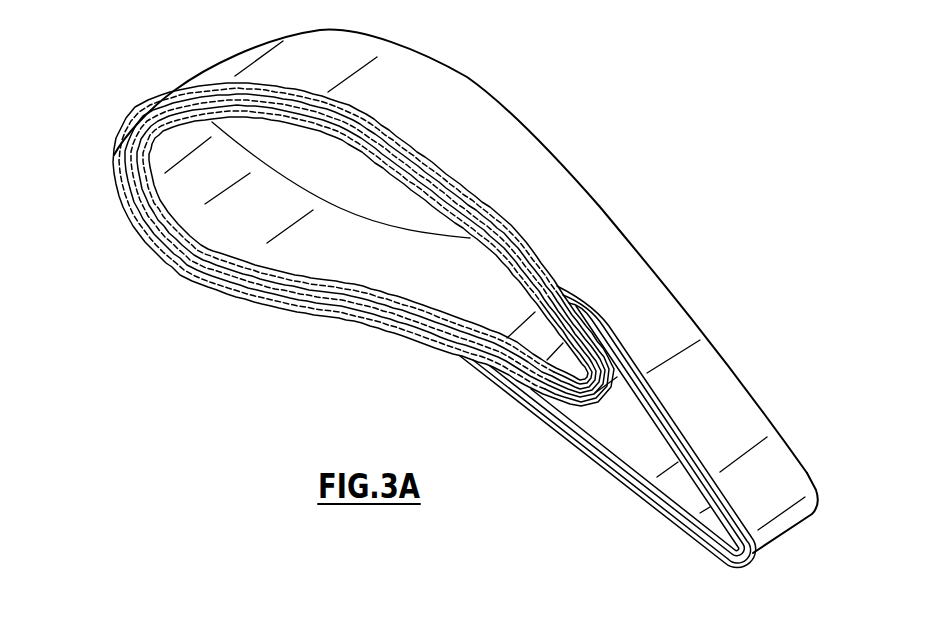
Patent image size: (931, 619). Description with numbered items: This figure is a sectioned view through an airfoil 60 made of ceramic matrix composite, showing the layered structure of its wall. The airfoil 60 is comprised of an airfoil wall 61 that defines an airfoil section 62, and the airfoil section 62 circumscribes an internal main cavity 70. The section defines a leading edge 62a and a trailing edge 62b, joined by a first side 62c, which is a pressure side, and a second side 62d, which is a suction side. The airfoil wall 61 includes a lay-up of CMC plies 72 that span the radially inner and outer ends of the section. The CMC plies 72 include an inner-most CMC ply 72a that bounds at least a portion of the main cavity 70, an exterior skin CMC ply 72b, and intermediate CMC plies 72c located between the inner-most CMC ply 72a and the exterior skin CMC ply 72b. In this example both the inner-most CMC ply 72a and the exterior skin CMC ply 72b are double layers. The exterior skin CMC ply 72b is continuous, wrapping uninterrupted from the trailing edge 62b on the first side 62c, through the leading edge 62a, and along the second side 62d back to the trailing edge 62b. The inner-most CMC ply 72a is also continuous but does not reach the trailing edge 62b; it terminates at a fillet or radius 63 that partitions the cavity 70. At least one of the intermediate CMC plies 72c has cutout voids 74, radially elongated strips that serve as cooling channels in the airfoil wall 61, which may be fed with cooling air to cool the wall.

The airfoil 60 is at (172, 337).
The airfoil wall 61 is at (152, 236).
The airfoil section 62 is at (545, 422).
The leading edge 62a is at (116, 156).
The trailing edge 62b is at (763, 538).
The first side 62c is at (315, 313).
The second side 62d is at (487, 138).
The fillet or radius 63 is at (600, 405).
The main cavity 70 is at (404, 206).
The CMC plies 72 is at (560, 298).
The inner-most CMC ply 72a is at (442, 300).
The exterior skin CMC ply 72b is at (390, 326).
The intermediate CMC plies 72c is at (268, 264).
The cutout voids 74 is at (250, 266).